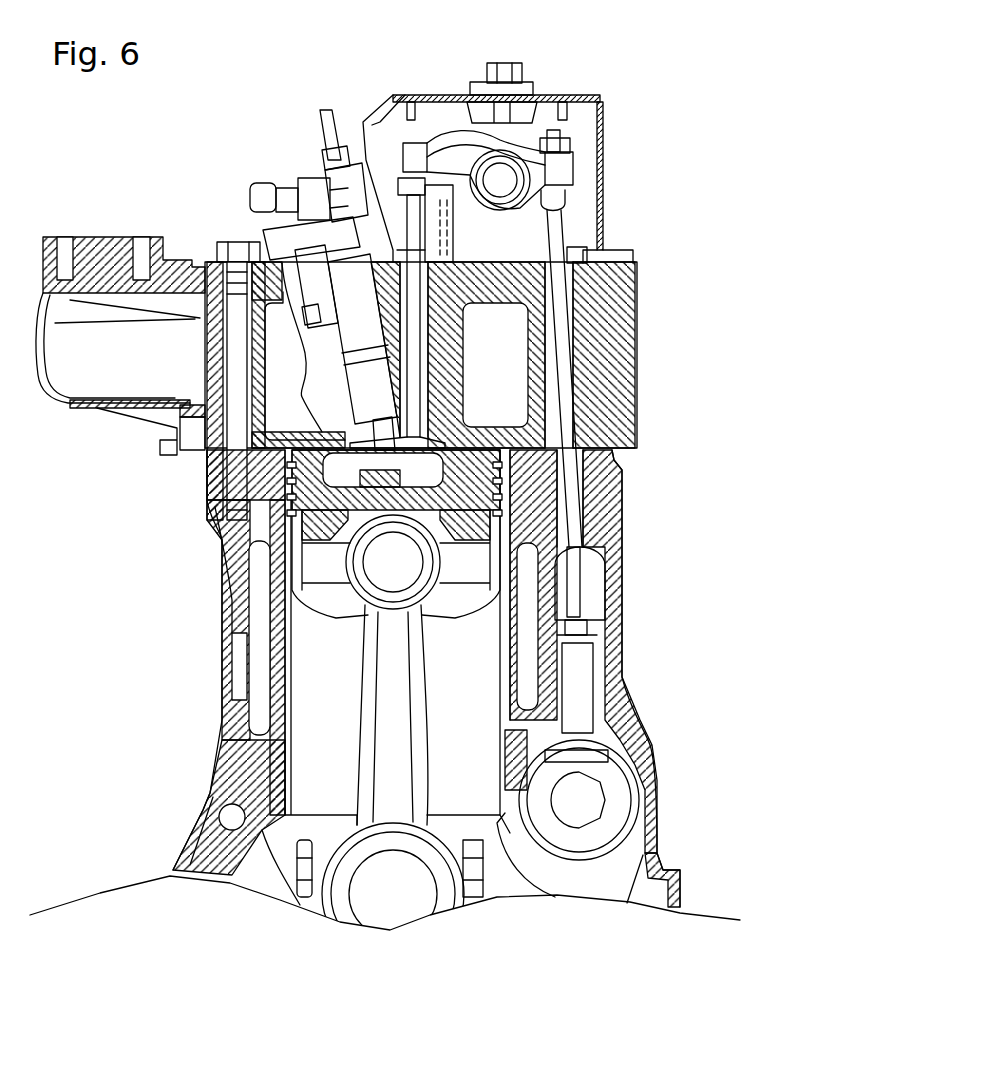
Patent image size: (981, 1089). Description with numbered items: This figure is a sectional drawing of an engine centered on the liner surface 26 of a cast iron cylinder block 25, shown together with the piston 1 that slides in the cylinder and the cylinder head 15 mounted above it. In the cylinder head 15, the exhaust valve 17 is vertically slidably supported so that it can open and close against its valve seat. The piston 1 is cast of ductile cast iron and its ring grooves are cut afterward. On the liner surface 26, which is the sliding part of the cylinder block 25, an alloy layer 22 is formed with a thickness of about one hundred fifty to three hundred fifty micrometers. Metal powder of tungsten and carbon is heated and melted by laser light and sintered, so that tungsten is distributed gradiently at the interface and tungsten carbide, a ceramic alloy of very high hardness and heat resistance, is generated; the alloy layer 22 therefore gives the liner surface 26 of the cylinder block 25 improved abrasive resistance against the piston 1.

The piston 1 is at (300, 470).
The cylinder head 15 is at (423, 317).
The exhaust valve 17 is at (420, 430).
The alloy layer 22 is at (480, 665).
The cylinder block 25 is at (657, 495).
The liner surface 26 is at (540, 740).